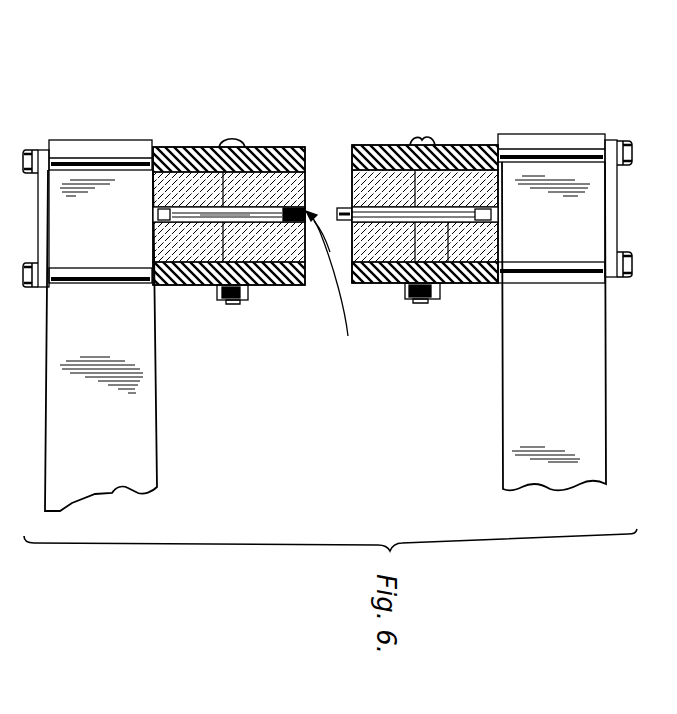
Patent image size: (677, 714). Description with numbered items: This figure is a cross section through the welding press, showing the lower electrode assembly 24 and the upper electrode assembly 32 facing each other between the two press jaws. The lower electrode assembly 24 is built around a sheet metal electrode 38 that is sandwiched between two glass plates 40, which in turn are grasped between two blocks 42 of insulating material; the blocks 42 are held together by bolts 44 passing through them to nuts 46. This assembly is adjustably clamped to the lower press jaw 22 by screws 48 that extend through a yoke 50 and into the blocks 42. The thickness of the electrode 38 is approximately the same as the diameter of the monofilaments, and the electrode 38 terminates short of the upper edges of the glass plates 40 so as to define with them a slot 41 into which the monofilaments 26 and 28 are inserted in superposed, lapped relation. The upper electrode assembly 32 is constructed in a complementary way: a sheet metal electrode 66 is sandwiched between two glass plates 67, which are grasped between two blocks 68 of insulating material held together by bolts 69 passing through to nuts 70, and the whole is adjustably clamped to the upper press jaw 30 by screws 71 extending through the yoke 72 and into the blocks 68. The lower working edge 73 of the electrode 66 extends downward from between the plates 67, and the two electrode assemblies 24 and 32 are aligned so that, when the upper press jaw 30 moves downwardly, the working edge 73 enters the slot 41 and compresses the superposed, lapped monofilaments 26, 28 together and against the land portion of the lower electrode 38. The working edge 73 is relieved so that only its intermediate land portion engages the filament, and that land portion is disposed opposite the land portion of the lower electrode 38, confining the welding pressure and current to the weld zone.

The lower press jaw 22 is at (101, 340).
The lower electrode assembly 24 is at (246, 181).
The monofilament 26 is at (257, 146).
The monofilament 28 is at (330, 285).
The upper press jaw 30 is at (554, 326).
The upper electrode assembly 32 is at (413, 206).
The sheet metal electrode 38 is at (262, 285).
The glass plates 40 is at (311, 150).
The slot 41 is at (352, 283).
The blocks of insulating material 42 is at (276, 146).
The bolts 44 is at (222, 146).
The nuts 46 is at (217, 297).
The screws 48 is at (97, 162).
The yoke 50 is at (38, 206).
The sheet metal electrode 66 is at (463, 285).
The glass plates 67 is at (390, 146).
The blocks of insulating material 68 is at (366, 146).
The bolts 69 is at (430, 146).
The nuts 70 is at (438, 298).
The screws 71 is at (556, 155).
The yoke 72 is at (617, 206).
The lower working edge 73 is at (340, 207).